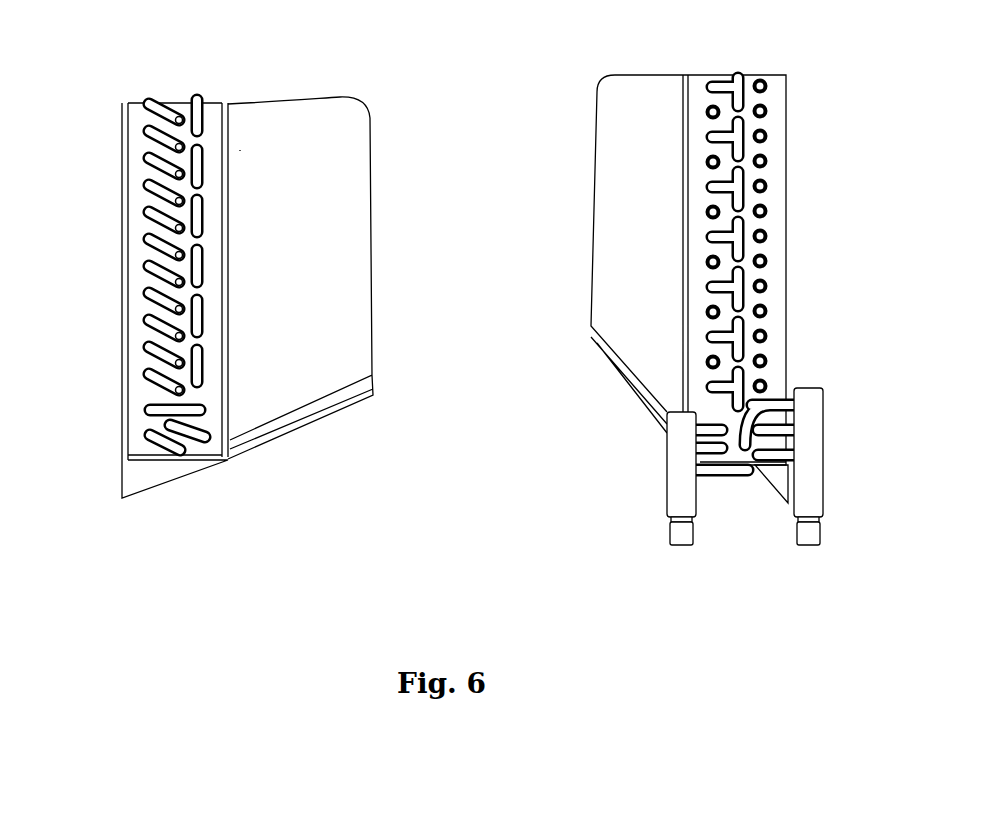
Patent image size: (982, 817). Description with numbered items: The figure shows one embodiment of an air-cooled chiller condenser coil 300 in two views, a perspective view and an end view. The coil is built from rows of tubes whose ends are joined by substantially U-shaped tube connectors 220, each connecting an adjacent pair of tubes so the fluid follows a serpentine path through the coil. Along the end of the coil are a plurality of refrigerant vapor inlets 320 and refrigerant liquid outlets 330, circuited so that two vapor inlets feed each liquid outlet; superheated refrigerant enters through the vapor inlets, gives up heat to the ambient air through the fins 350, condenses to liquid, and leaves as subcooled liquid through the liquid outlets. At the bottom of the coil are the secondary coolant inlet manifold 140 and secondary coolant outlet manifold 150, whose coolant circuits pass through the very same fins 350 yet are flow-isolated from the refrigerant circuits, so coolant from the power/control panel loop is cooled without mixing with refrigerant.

The condenser coil 300 is at (366, 97).
The fins 350 is at (326, 254).
The tube connector 220 is at (142, 346).
The refrigerant liquid outlets 330 is at (700, 102).
The refrigerant vapor inlets 320 is at (772, 75).
The secondary coolant outlet manifold 150 is at (660, 486).
The secondary coolant inlet manifold 140 is at (828, 472).